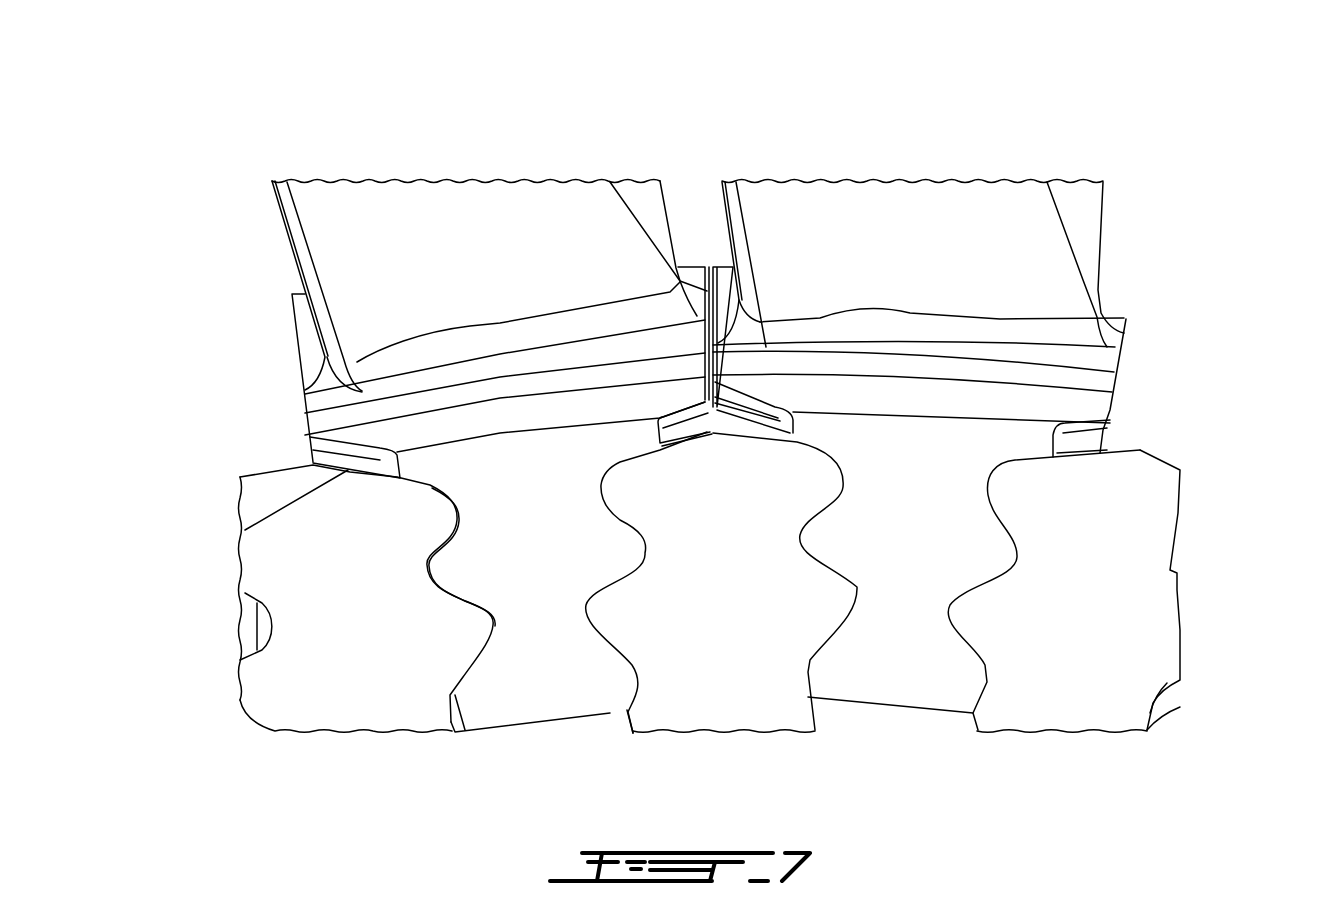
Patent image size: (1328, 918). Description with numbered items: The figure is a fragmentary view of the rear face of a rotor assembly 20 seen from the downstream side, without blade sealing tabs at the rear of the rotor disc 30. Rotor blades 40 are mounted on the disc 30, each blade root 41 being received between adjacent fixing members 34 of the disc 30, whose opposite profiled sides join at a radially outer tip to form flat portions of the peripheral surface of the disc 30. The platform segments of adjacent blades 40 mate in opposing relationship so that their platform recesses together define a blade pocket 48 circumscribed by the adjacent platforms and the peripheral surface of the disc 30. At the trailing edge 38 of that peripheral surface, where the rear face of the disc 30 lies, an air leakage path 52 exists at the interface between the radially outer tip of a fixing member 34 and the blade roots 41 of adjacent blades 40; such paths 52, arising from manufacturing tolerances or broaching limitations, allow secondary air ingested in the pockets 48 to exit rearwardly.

The rotor assembly 20 is at (1187, 185).
The rotor disc 30 is at (215, 572).
The fixing members 34 is at (353, 615).
The trailing edge 38 is at (757, 442).
The rotor blade 40 is at (212, 200).
The blade root 41 is at (531, 548).
The blade pocket 48 is at (710, 417).
The air leakage path 52 is at (717, 422).